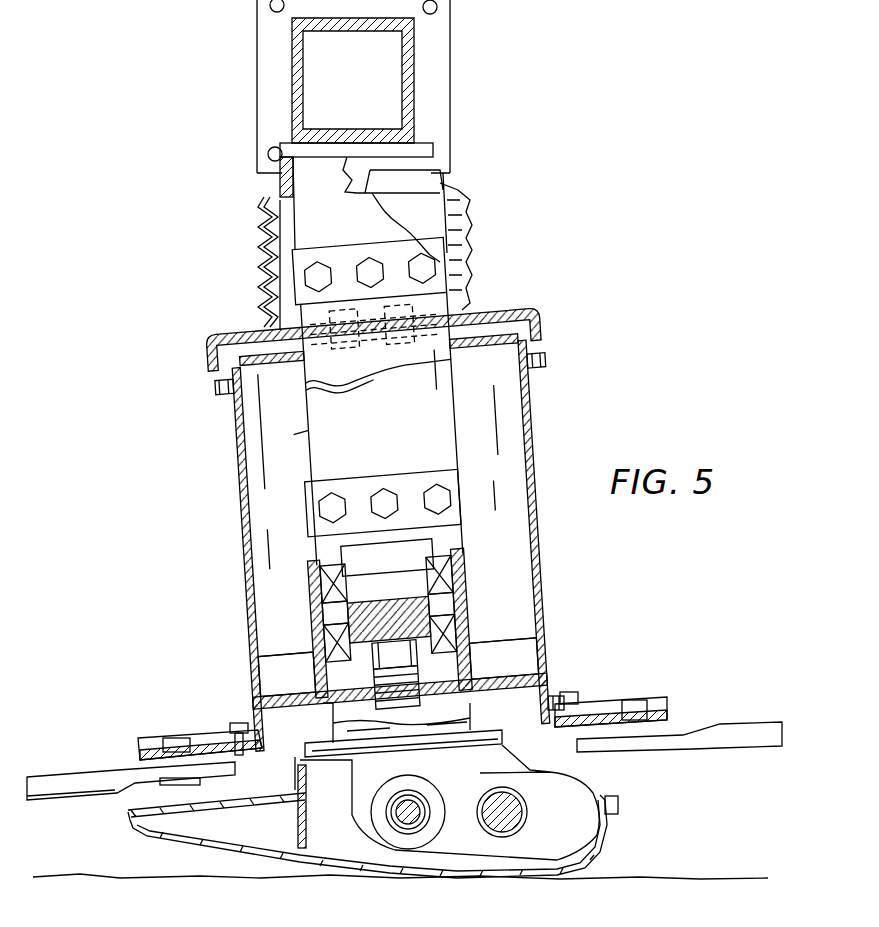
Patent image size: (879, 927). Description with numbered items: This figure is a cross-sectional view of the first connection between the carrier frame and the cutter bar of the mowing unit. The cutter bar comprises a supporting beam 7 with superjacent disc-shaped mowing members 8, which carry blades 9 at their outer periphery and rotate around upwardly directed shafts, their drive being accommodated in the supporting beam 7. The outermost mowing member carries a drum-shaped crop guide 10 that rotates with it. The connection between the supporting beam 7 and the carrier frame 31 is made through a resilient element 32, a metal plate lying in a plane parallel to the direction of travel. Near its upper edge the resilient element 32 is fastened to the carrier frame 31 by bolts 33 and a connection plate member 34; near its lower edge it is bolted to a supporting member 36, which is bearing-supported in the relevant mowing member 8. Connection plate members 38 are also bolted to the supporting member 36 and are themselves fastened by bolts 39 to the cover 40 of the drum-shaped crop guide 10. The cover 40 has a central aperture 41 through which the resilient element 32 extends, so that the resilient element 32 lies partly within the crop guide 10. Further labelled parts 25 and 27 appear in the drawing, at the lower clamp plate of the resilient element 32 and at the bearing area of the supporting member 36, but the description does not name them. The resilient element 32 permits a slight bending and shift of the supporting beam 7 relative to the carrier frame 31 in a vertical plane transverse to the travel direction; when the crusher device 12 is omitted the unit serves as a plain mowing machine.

The supporting beam 7 is at (622, 853).
The mowing members 8 is at (162, 726).
The blades 9 is at (60, 772).
The drum-shaped crop guide 10 is at (243, 540).
The crusher device 12 is at (258, 246).
The lower clamp plate 25 is at (388, 492).
The bearing 27 is at (326, 643).
The carrier frame 31 is at (292, 46).
The resilient element 32 is at (430, 362).
The bolts 33 is at (370, 266).
The connection plate member 34 is at (318, 213).
The supporting member 36 is at (414, 598).
The connection plate members 38 is at (325, 432).
The bolts 39 is at (340, 352).
The cover 40 is at (224, 336).
The central aperture 41 is at (290, 367).